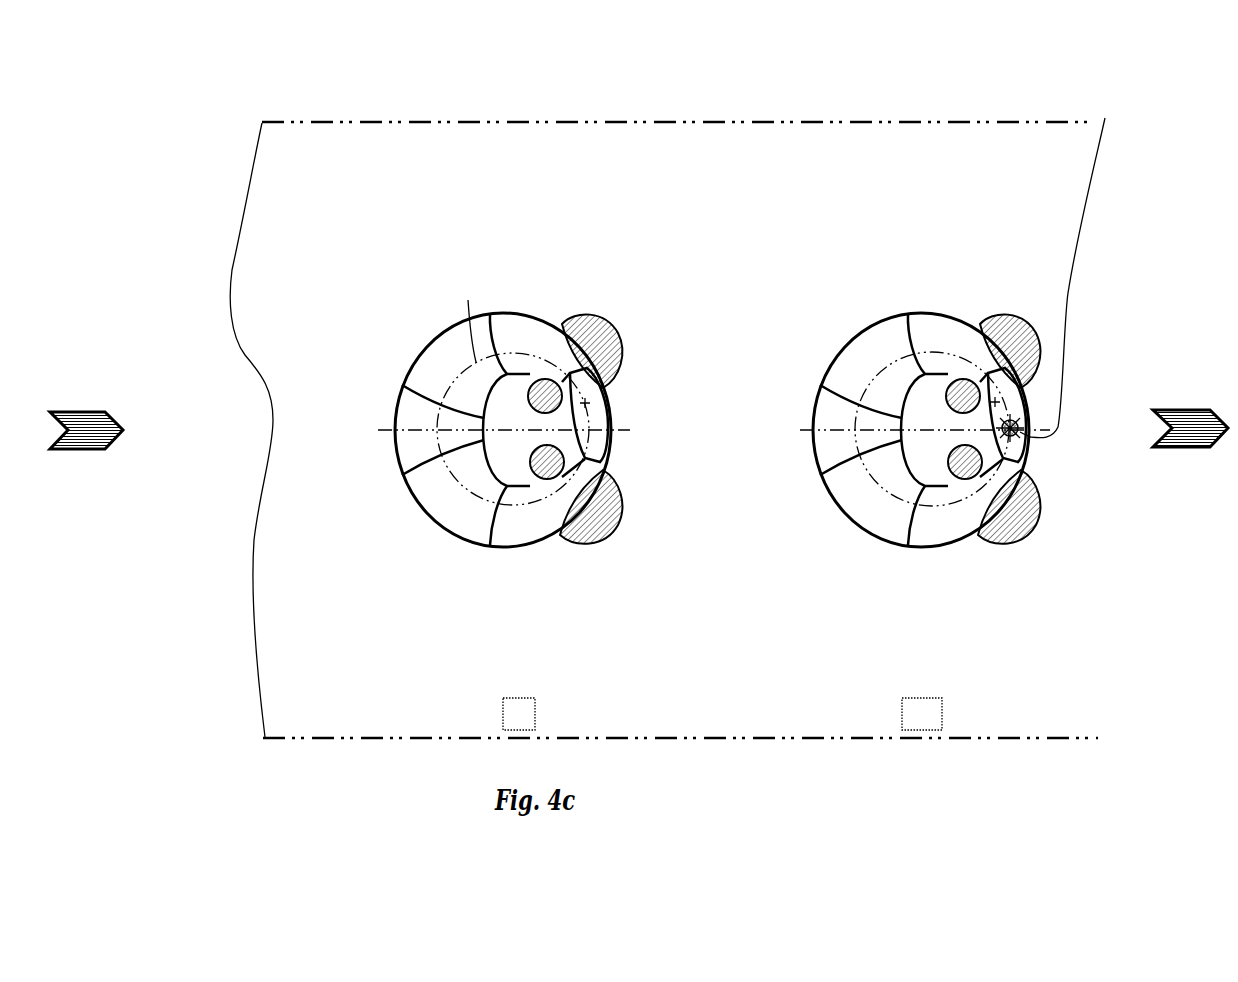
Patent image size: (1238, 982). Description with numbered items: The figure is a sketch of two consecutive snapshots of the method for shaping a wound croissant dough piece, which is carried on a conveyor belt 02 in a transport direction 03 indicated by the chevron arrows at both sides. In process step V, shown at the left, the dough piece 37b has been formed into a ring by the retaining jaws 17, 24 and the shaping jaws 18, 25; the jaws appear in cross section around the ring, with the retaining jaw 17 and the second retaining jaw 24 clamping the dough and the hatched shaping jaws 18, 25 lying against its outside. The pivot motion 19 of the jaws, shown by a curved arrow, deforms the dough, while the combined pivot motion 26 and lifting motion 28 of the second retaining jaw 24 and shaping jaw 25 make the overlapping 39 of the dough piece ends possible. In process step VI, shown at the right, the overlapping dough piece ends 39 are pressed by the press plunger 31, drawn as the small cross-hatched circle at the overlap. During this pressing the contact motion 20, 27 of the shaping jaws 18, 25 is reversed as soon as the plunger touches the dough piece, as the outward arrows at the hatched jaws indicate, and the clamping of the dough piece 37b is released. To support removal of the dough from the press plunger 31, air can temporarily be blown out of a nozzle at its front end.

The annular dough piece 37b is at (437, 360).
The second retaining jaw 24 is at (468, 300).
The pivot motion 26 is at (531, 230).
The lifting motion 28 is at (581, 292).
The shaping jaw 25 is at (564, 230).
The overlapping ends 39 is at (627, 420).
The retaining jaw 17 is at (533, 458).
The pivot motion 19 is at (597, 553).
The shaping jaw 18 is at (635, 626).
The contact motion 27 is at (1040, 333).
The press plunger 31 is at (1100, 737).
The contact motion 20 is at (1040, 528).
The transport direction 03 is at (1198, 446).
The conveyor belt 02 is at (1079, 717).
The process step V is at (519, 714).
The process step VI is at (922, 714).